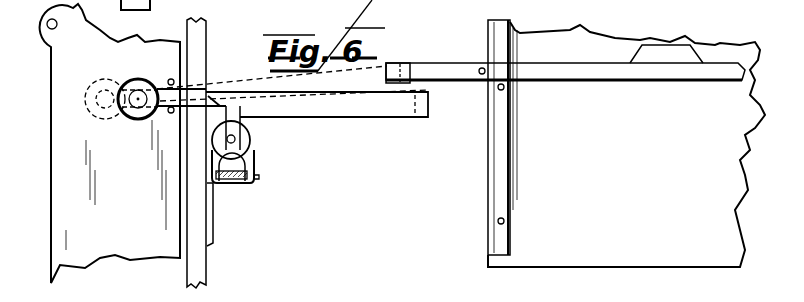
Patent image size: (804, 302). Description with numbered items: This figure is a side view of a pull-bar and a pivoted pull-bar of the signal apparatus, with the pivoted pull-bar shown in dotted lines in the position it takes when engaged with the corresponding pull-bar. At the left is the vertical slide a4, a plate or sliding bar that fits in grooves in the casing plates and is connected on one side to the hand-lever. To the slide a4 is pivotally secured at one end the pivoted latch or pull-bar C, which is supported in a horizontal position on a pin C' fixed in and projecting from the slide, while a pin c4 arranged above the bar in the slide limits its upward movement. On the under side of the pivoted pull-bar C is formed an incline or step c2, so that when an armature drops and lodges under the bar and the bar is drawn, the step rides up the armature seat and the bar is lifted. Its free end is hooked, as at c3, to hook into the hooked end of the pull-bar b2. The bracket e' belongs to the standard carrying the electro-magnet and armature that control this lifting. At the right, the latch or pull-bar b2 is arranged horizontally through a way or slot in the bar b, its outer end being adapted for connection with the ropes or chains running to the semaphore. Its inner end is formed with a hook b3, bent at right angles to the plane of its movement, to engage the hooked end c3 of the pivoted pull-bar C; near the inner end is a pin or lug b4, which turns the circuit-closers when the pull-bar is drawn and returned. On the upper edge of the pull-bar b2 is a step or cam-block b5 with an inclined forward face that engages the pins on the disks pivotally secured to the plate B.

The vertical slide a4 is at (110, 143).
The pivoted latch or pull-bar C is at (256, 99).
The pin C' is at (165, 120).
The incline or step c2 is at (243, 116).
The hooked end c3 is at (397, 104).
The pin c4 is at (167, 73).
The bracket e' is at (219, 214).
The bar b is at (499, 137).
The latch or pull-bar b2 is at (565, 62).
The hook b3 is at (398, 63).
The pin or lug b4 is at (480, 68).
The step or cam-block b5 is at (666, 54).
The plate B is at (626, 144).